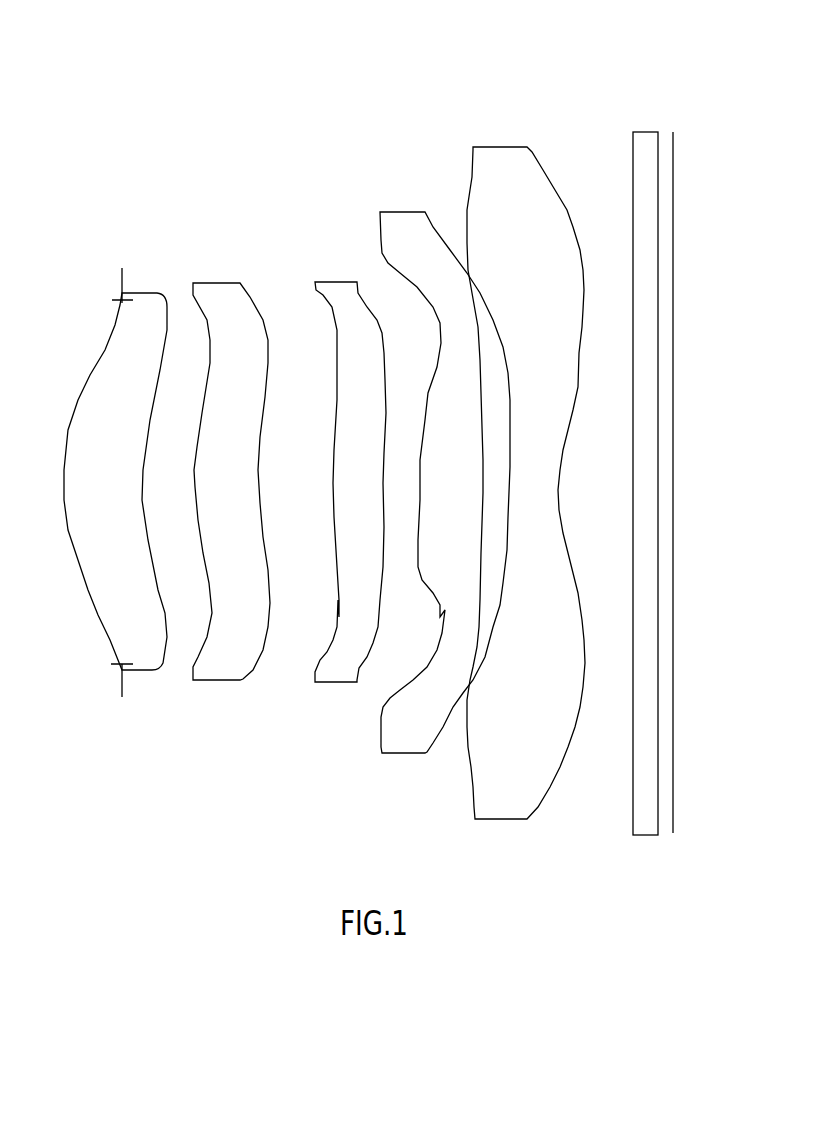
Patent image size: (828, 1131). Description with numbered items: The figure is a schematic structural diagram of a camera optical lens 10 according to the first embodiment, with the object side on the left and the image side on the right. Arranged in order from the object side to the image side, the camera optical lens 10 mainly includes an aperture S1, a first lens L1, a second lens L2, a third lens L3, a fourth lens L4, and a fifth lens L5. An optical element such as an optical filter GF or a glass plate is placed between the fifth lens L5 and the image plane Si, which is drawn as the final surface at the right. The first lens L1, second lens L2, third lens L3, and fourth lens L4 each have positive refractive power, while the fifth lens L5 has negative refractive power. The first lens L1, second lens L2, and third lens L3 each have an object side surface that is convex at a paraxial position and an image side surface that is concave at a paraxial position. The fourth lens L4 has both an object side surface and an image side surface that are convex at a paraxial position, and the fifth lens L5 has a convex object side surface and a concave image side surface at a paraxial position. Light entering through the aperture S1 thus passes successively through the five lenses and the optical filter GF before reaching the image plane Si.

The camera optical lens 10 is at (358, 72).
The aperture S1 is at (123, 471).
The first lens L1 is at (115, 470).
The second lens L2 is at (231, 469).
The third lens L3 is at (350, 469).
The fourth lens L4 is at (445, 470).
The fifth lens L5 is at (526, 470).
The optical filter GF is at (645, 470).
The image plane Si is at (675, 469).